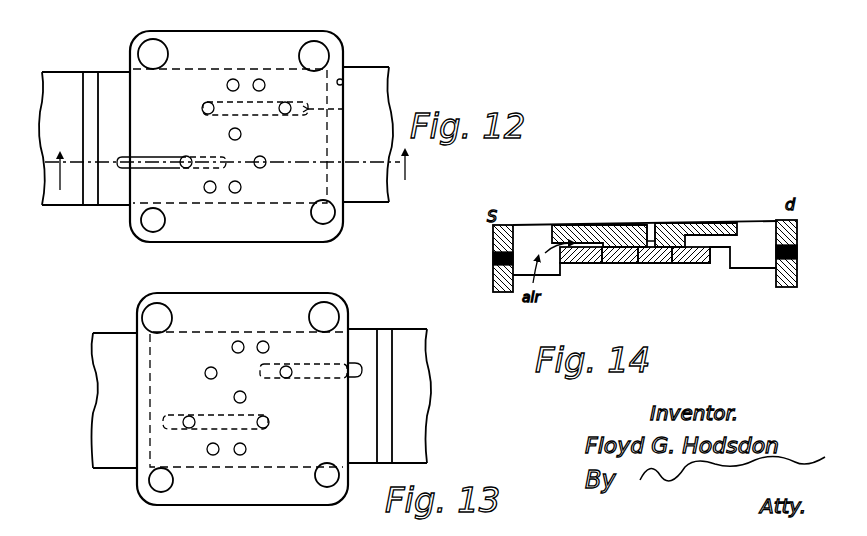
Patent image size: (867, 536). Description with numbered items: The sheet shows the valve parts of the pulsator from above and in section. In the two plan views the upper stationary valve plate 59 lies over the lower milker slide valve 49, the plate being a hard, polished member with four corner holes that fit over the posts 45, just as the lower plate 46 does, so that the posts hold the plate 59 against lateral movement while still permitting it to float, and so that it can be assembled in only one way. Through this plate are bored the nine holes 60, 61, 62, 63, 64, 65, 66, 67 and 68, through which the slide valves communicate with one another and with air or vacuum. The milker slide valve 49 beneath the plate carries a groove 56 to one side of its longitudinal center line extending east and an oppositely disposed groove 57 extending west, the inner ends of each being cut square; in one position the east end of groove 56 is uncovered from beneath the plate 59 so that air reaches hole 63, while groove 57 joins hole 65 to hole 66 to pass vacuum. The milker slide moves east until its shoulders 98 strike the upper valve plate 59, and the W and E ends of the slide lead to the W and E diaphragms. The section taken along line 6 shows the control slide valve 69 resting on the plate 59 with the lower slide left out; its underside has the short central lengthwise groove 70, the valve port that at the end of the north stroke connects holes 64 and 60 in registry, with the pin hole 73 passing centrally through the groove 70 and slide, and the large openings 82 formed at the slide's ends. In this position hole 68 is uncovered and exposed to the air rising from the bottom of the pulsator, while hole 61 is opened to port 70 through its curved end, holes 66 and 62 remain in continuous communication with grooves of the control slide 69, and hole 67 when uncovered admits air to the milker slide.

In FIG. 12, the section line 6- 6 is at (226, 179).
In FIG. 12, the posts 45 is at (153, 62).
In FIG. 13, the posts 45 is at (160, 313).
In FIG. 12, the lower plate 46 is at (317, 213).
In FIG. 12, the slide valve 49 is at (383, 80).
In FIG. 13, the slide valve 49 is at (413, 338).
In FIG. 12, the groove 56 is at (345, 110).
In FIG. 13, the groove 56 is at (357, 362).
In FIG. 12, the groove 57 is at (125, 157).
In FIG. 13, the groove 57 is at (163, 420).
In FIG. 12, the upper stationary valve plate 59 is at (342, 42).
In FIG. 13, the upper stationary valve plate 59 is at (320, 295).
In FIG. 14, the upper stationary valve plate 59 is at (695, 260).
In FIG. 12, the hole 60 is at (233, 79).
In FIG. 13, the hole 60 is at (240, 341).
In FIG. 14, the hole 60 is at (672, 260).
In FIG. 12, the hole 61 is at (260, 79).
In FIG. 13, the hole 61 is at (265, 341).
In FIG. 14, the hole 61 is at (632, 262).
In FIG. 12, the hole 62 is at (207, 102).
In FIG. 13, the hole 62 is at (242, 392).
In FIG. 12, the hole 63 is at (288, 103).
In FIG. 13, the hole 63 is at (289, 368).
In FIG. 12, the hole 64 is at (241, 134).
In FIG. 12, the hole 65 is at (186, 156).
In FIG. 13, the hole 65 is at (189, 416).
In FIG. 12, the hole 66 is at (263, 160).
In FIG. 13, the hole 66 is at (265, 418).
In FIG. 12, the hole 67 is at (204, 187).
In FIG. 13, the hole 67 is at (207, 449).
In FIG. 12, the hole 68 is at (241, 187).
In FIG. 13, the hole 68 is at (246, 448).
In FIG. 14, the hole 68 is at (597, 272).
In FIG. 14, the control slide valve 69 is at (608, 227).
In FIG. 14, the groove 70 is at (664, 240).
In FIG. 14, the pin hole 73 is at (653, 223).
In FIG. 14, the openings 82 is at (533, 235).
In FIG. 12, the shoulders 98 is at (83, 97).
In FIG. 13, the shoulders 98 is at (138, 357).